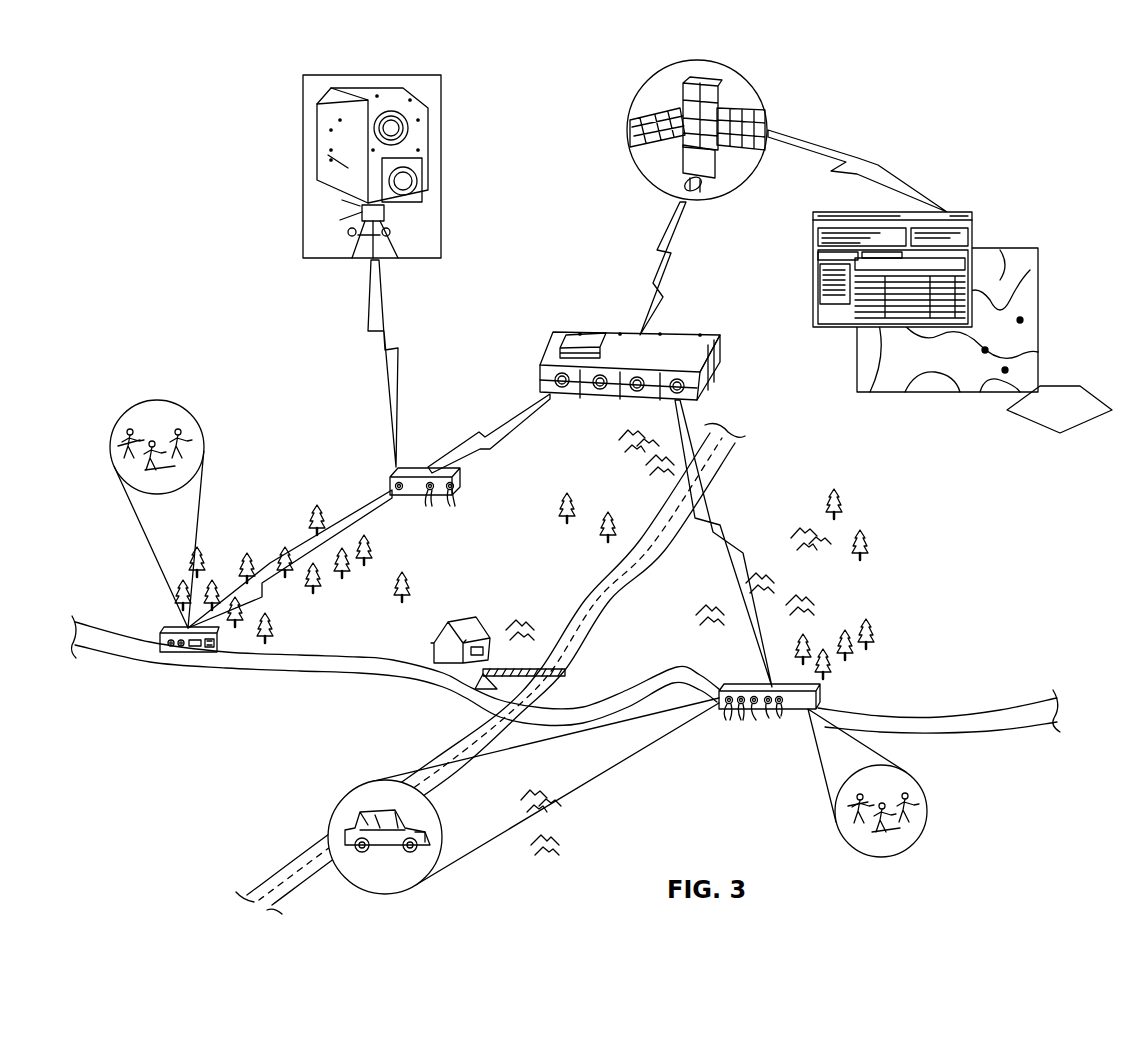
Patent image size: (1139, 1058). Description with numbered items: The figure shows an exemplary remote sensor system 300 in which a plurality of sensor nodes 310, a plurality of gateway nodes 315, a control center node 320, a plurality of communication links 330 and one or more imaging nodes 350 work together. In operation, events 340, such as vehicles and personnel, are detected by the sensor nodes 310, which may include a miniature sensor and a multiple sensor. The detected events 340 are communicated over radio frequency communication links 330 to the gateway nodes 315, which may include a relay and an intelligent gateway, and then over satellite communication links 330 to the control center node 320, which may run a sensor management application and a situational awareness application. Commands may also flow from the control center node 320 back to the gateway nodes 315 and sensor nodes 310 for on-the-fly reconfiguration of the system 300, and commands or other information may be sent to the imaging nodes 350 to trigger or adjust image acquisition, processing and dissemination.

The remote sensor system 300 is at (203, 108).
The sensor nodes 310 is at (177, 655).
The gateway nodes 315 is at (615, 334).
The control center node 320 is at (1076, 384).
The communication links 330 is at (863, 153).
The events 340 is at (157, 398).
The imaging nodes 350 is at (442, 149).